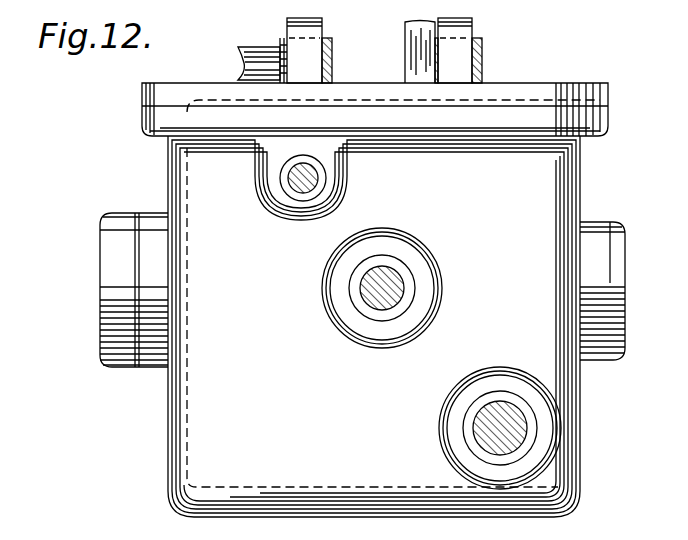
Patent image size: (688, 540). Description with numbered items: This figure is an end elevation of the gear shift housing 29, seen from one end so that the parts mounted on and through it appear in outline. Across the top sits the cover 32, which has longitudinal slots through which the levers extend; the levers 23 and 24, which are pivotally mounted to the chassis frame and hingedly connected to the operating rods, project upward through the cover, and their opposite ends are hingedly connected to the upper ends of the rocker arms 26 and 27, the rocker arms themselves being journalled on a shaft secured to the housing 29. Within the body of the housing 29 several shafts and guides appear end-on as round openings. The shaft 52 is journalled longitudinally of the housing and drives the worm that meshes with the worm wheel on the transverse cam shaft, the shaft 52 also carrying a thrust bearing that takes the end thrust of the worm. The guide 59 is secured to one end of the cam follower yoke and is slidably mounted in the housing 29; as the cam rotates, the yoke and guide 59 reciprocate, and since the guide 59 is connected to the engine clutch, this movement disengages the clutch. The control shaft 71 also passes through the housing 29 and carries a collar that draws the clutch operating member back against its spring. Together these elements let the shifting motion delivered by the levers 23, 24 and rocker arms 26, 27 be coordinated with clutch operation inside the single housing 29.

The lever 23 is at (406, 39).
The lever 24 is at (236, 63).
The rocker arm 26 is at (460, 50).
The rocker arm 27 is at (306, 50).
The housing 29 is at (362, 308).
The cover 32 is at (608, 95).
The shaft 52 is at (490, 428).
The guide 59 is at (370, 288).
The control shaft 71 is at (303, 166).